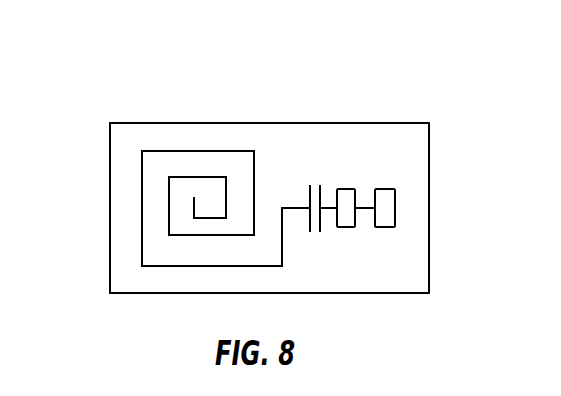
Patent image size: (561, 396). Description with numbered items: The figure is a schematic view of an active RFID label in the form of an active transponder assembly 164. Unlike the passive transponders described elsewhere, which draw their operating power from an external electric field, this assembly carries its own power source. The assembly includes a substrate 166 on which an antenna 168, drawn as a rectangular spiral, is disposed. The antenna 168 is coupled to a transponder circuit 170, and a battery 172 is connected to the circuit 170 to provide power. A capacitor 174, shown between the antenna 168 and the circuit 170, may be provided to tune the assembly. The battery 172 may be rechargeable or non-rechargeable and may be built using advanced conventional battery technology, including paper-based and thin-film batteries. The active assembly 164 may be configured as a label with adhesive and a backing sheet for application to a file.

The active transponder assembly 164 is at (418, 82).
The substrate 166 is at (412, 178).
The antenna 168 is at (142, 207).
The transponder circuit 170 is at (346, 227).
The battery 172 is at (389, 227).
The capacitor 174 is at (313, 185).